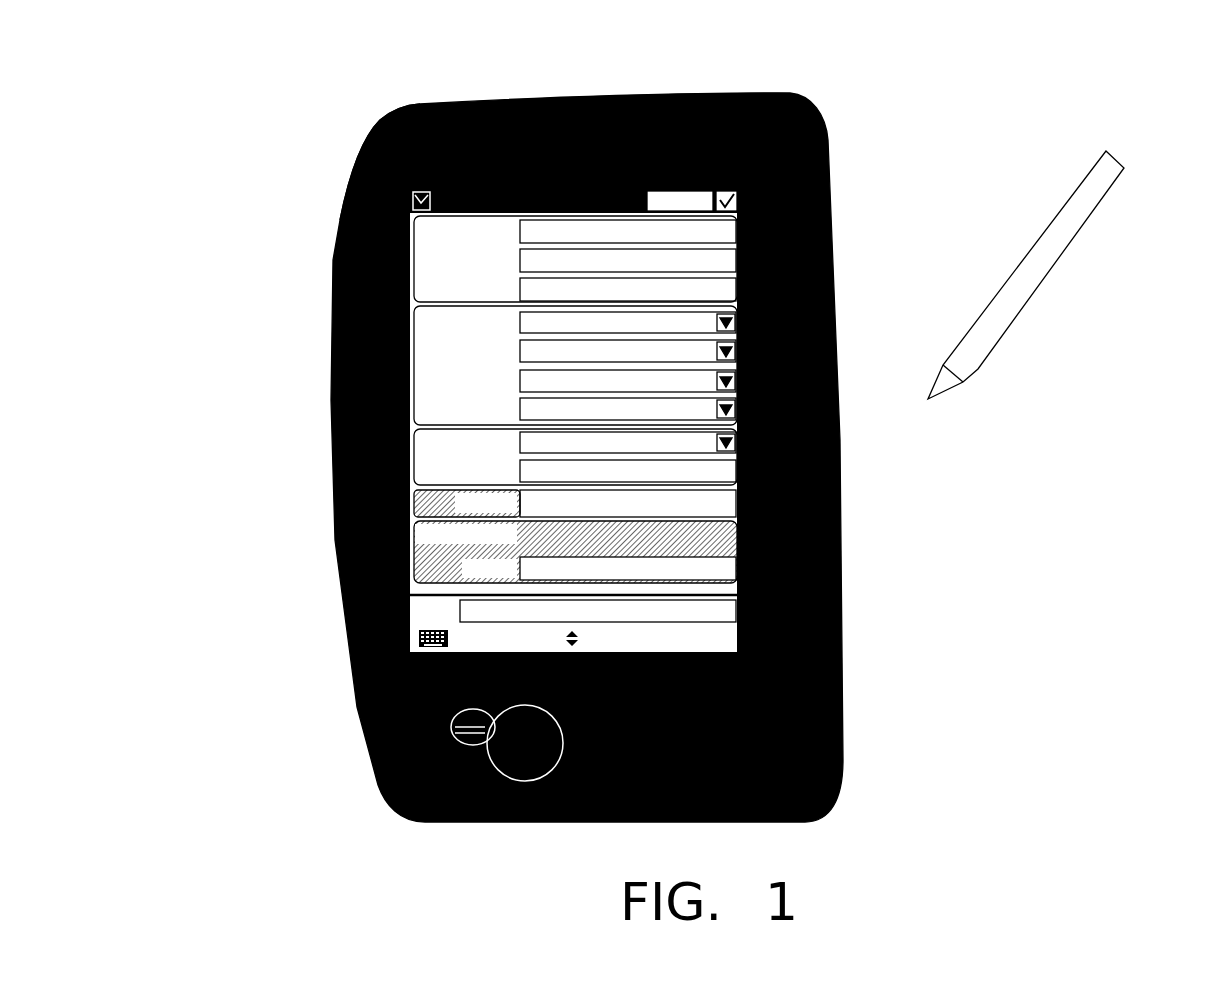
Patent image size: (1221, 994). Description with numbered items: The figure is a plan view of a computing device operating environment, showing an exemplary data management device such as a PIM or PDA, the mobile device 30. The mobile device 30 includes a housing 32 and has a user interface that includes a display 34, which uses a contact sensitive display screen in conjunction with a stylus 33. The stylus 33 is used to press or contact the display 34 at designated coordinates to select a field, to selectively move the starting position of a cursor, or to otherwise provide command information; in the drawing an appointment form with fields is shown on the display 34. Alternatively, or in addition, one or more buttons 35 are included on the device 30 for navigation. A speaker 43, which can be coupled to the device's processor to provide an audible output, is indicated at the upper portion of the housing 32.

The mobile device 30 is at (553, 427).
The housing 32 is at (612, 93).
The speaker 43 is at (425, 103).
The stylus 33 is at (1088, 215).
The display 34 is at (700, 508).
The buttons 35 is at (330, 315).